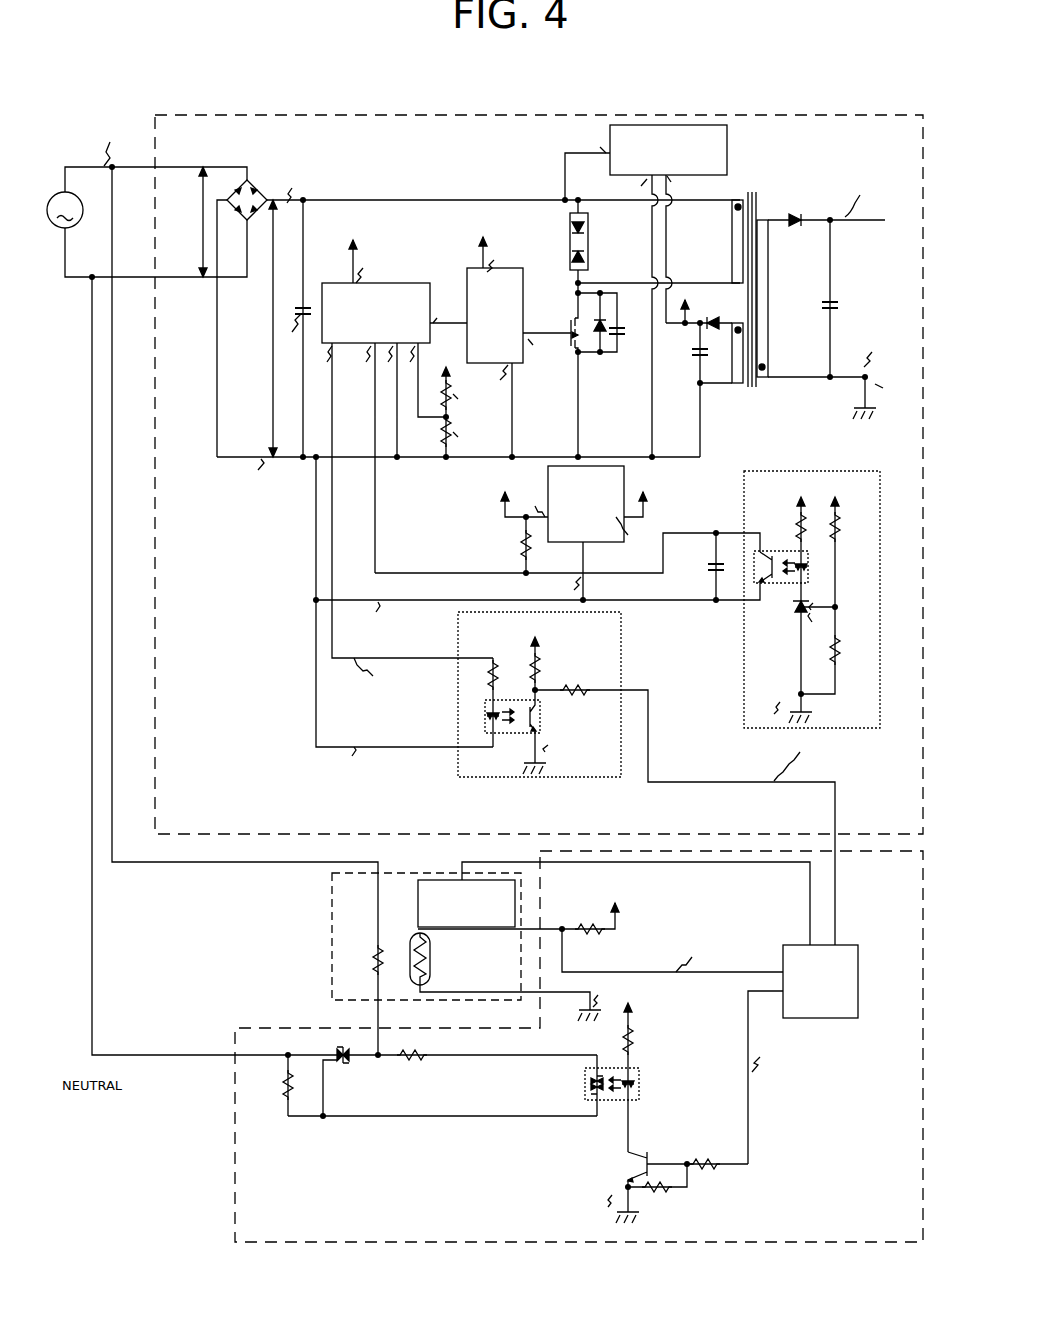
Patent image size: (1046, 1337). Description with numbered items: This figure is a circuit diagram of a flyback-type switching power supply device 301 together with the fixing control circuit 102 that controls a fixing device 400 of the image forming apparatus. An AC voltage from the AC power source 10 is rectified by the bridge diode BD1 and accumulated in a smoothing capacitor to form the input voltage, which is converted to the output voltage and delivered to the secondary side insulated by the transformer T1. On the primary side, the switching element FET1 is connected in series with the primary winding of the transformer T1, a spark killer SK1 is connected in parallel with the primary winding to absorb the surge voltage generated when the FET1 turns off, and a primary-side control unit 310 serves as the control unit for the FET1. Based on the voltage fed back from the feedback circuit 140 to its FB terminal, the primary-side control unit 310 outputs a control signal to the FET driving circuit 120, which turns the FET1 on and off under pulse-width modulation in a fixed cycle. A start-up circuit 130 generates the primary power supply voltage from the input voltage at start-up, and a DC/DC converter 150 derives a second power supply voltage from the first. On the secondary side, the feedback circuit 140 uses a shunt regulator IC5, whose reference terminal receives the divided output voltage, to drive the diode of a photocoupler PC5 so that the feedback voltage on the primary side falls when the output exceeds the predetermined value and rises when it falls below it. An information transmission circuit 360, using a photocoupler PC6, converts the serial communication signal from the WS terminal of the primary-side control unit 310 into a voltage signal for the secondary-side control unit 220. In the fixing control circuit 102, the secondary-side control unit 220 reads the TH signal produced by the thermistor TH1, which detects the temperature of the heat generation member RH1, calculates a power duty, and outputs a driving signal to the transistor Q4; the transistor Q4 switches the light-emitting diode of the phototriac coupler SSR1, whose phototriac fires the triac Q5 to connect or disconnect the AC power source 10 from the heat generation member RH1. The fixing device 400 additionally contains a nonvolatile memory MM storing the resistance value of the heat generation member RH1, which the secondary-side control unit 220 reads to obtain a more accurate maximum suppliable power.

The AC power source 10 is at (66, 162).
The switching power supply device 301 is at (923, 285).
The fixing control circuit 102 is at (923, 928).
The fixing device 400 is at (327, 917).
The feedback circuit 140 is at (880, 522).
The information transmission circuit 360 is at (614, 651).
The primary-side control unit 310 is at (401, 283).
The FET driving circuit 120 is at (519, 337).
The start-up circuit 130 is at (646, 291).
The DC/DC converter 150 is at (572, 533).
The secondary-side control unit 220 is at (803, 1054).
The bridge diode BD1 is at (258, 179).
The field-effect transistor FET1 is at (559, 336).
The spark killer SK1 is at (566, 257).
The insulating transformer T1 is at (755, 192).
The thermistor TH1 is at (436, 963).
The heat generation member RH1 is at (372, 970).
The phototriac coupler SSR1 is at (651, 1093).
The transistor Q4 is at (642, 1147).
The triac Q5 is at (338, 1073).
The photocoupler PC5 is at (783, 596).
The photocoupler PC6 is at (541, 723).
The shunt regulator IC5 is at (795, 631).
The nonvolatile memory MM is at (418, 902).